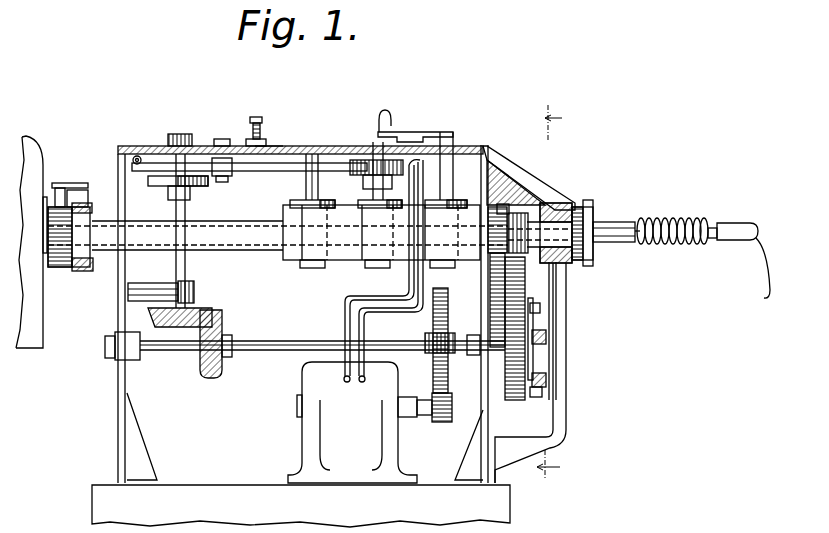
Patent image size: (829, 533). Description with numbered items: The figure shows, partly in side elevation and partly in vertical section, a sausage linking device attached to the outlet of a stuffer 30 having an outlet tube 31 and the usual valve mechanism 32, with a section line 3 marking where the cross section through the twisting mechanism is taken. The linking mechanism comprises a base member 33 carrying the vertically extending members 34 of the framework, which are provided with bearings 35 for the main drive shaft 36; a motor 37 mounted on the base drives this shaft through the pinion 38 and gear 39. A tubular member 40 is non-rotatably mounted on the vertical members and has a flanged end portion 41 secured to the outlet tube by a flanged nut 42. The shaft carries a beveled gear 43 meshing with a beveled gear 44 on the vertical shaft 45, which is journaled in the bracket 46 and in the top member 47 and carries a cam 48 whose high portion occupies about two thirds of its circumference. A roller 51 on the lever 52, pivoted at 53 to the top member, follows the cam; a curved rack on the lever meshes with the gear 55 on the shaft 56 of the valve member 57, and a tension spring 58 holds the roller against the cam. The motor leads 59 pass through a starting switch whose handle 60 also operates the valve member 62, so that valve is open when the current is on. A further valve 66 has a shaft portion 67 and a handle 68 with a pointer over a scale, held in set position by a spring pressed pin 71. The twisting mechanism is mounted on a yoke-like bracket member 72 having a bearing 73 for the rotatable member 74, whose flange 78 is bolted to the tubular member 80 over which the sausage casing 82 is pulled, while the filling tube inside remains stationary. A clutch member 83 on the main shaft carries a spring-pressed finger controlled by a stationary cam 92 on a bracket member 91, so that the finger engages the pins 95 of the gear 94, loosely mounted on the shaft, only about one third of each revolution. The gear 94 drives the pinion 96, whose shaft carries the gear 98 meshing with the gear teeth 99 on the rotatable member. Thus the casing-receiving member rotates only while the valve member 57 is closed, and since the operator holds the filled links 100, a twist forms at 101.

The stuffer 30 is at (32, 153).
The outlet tube 31 is at (62, 268).
The valve mechanism 32 is at (58, 188).
The base member 33 is at (115, 503).
The vertically extending members 34 is at (118, 410).
The bearings 35 is at (135, 350).
The main drive shaft 36 is at (279, 344).
The motor 37 is at (348, 410).
The pinion 38 is at (432, 396).
The gear 39 is at (440, 312).
The tubular member 40 is at (250, 235).
The flanged end portion 41 is at (92, 235).
The flanged nut 42 is at (93, 270).
The beveled gear 43 is at (223, 322).
The beveled gear 44 is at (197, 310).
The shaft 45 is at (182, 212).
The bracket 46 is at (144, 290).
The top member 47 is at (153, 150).
The cam 48 is at (197, 183).
The roller 51 is at (172, 181).
The lever 52 is at (281, 170).
The pivot 53 is at (222, 158).
The gear 55 is at (364, 155).
The shaft 56 is at (365, 165).
The valve member 57 is at (393, 198).
The tension spring 58 is at (137, 156).
The leads 59 is at (357, 306).
The handle 60 is at (401, 132).
The valve member 62 is at (456, 200).
The valve 66 is at (303, 202).
The shaft portion 67 is at (318, 150).
The handle 68 is at (268, 150).
The spring pressed pin 71 is at (256, 117).
The yoke-like bracket member 72 is at (556, 388).
The bearing 73 is at (570, 262).
The rotatable member 74 is at (555, 203).
The flange 78 is at (584, 206).
The tubular member 80 is at (618, 224).
The sausage casing 82 is at (675, 222).
The clutch member 83 is at (533, 343).
The bracket member 91 is at (549, 310).
The stationary cam 92 is at (538, 316).
The gear 94 is at (517, 357).
The pins 95 is at (538, 308).
The pinion 96 is at (527, 272).
The gear 98 is at (490, 297).
The gear teeth 99 is at (502, 215).
The filled links 100 is at (738, 228).
The twist 101 is at (713, 228).
The section line 3- 3 is at (556, 292).